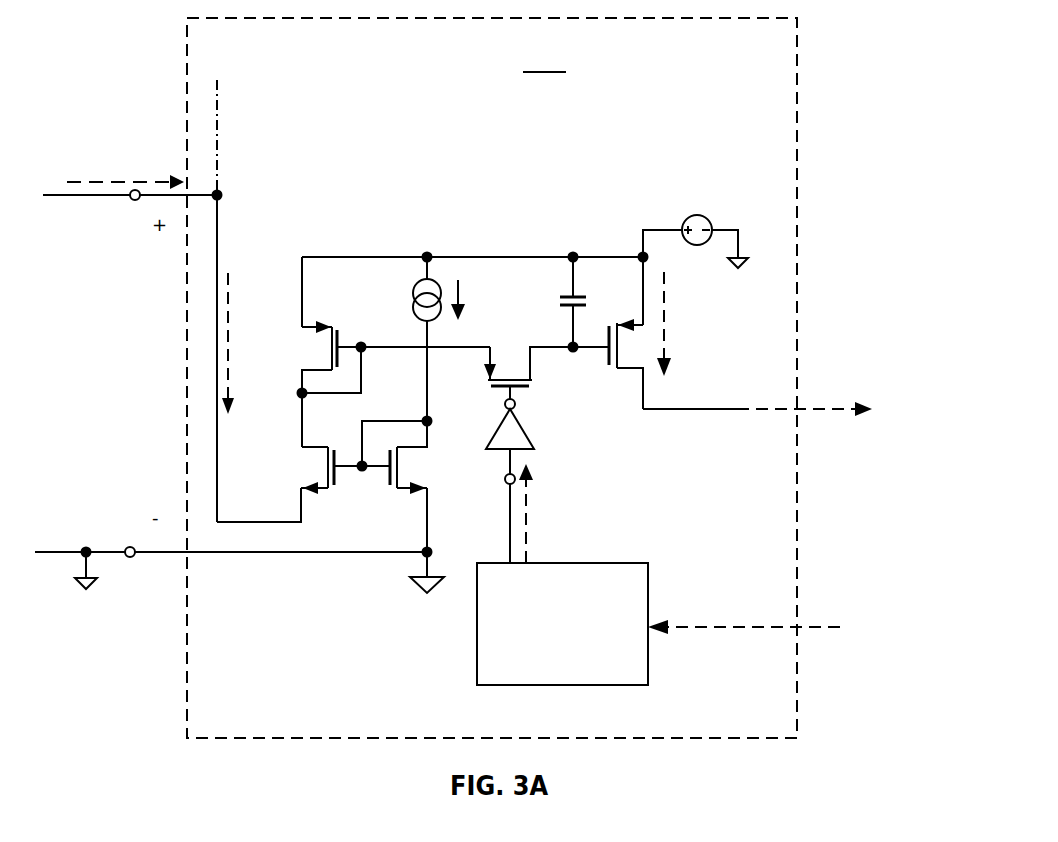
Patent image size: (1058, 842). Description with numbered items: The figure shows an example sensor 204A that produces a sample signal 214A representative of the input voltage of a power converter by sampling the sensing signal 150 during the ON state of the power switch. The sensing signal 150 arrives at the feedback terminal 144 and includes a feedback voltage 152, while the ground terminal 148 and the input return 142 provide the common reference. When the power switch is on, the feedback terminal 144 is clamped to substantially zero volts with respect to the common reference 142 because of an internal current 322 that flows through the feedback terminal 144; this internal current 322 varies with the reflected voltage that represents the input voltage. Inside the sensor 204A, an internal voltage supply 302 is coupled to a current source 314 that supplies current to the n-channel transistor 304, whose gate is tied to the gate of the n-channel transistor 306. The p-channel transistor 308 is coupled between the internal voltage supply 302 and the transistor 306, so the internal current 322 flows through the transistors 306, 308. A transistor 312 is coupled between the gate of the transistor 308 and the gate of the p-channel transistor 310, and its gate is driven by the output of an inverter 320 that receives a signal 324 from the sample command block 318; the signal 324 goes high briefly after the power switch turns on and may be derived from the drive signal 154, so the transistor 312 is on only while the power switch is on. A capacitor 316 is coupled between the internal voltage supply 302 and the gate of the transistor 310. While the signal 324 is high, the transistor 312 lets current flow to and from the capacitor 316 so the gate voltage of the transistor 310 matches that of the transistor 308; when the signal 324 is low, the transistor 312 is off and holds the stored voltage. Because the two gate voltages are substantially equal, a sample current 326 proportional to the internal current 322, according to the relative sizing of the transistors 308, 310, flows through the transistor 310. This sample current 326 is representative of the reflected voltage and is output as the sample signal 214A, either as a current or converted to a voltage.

The sensor 204A is at (492, 378).
The feedback terminal 144 is at (130, 205).
The sensing signal 150 is at (133, 172).
The input return 142 is at (72, 584).
The ground terminal 148 is at (130, 560).
The feedback voltage 152 is at (126, 370).
The internal current 322 is at (235, 360).
The current source 314 is at (442, 278).
The p-channel transistor 308 is at (343, 333).
The n-channel transistor 306 is at (300, 488).
The n-channel transistor 304 is at (386, 482).
The capacitor 316 is at (563, 287).
The transistor 312 is at (520, 392).
The inverter 320 is at (531, 440).
The signal 324 is at (530, 524).
The sample command block 318 is at (648, 668).
The drive signal 154 is at (705, 620).
The internal voltage supply 302 is at (702, 214).
The p-channel transistor 310 is at (633, 315).
The sample current 326 is at (672, 338).
The sample signal 214A is at (837, 405).